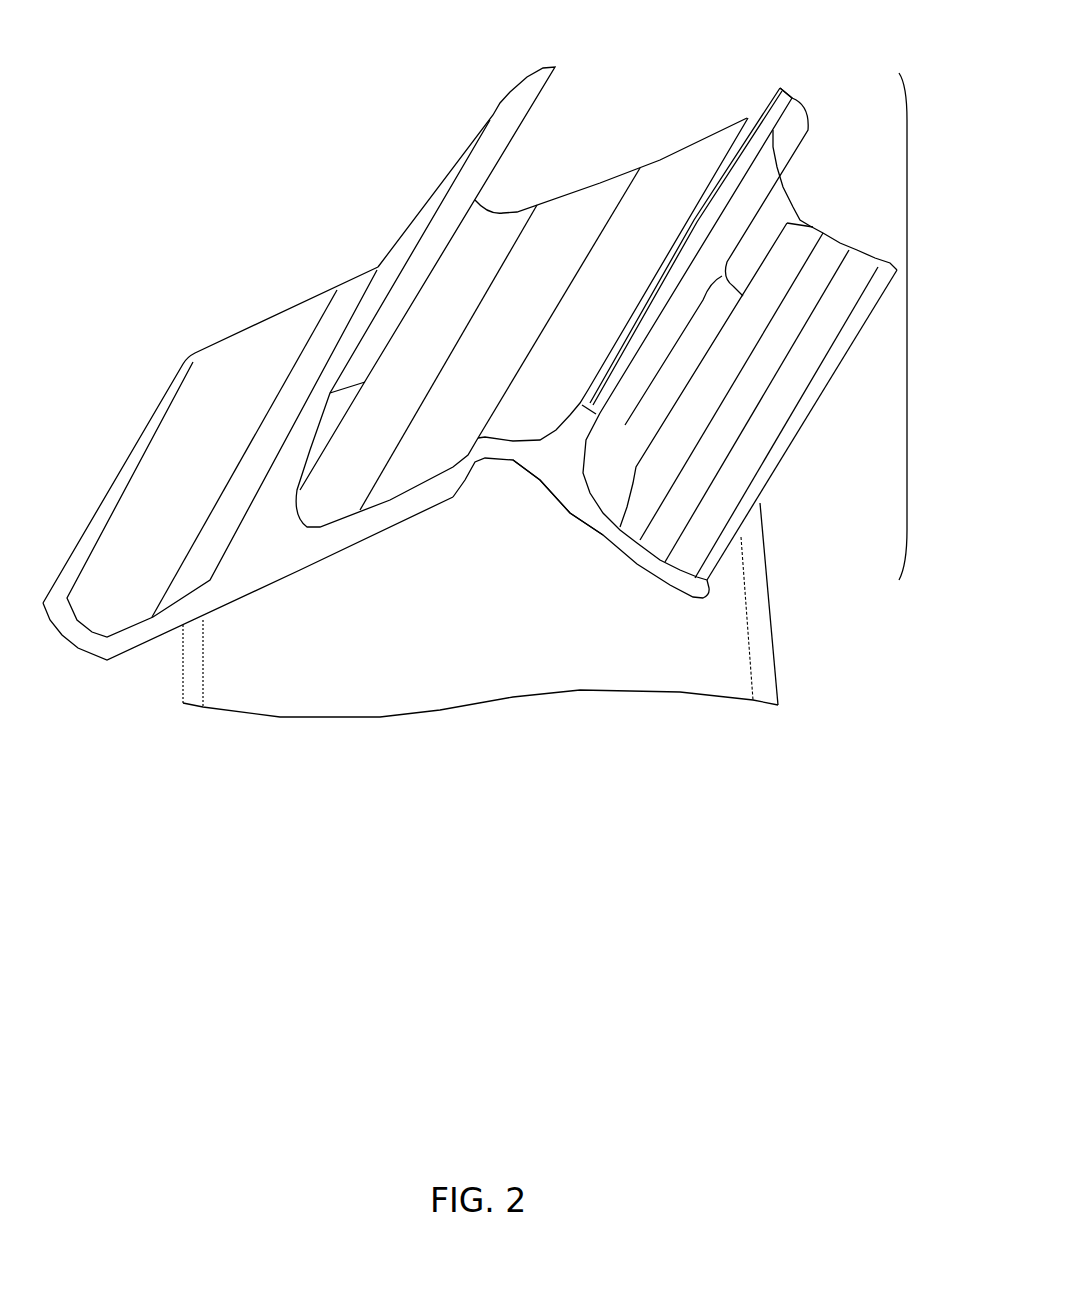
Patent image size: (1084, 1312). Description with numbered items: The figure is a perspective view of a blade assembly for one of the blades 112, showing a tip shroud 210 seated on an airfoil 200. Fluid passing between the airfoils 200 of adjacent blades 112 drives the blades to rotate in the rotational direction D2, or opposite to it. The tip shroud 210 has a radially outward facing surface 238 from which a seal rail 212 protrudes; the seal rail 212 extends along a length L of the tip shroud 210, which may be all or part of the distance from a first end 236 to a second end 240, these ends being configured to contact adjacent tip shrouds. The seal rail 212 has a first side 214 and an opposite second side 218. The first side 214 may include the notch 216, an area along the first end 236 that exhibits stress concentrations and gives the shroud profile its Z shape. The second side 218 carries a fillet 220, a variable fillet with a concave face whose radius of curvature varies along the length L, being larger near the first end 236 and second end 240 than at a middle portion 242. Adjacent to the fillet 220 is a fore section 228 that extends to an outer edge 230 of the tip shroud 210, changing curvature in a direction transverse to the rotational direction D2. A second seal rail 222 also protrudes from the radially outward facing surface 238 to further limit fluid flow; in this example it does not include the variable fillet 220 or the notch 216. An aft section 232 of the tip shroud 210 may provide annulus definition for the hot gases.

The airfoil 200 is at (727, 613).
The tip shroud 210 is at (909, 323).
The seal rail 212 is at (794, 98).
The first side 214 is at (712, 168).
The notch 216 is at (472, 467).
The second side 218 is at (785, 202).
The fillet 220 is at (718, 290).
The second seal rail 222 is at (507, 118).
The fore section 228 is at (672, 540).
The outer edge 230 is at (795, 445).
The aft section 232 is at (252, 395).
The first end 236 is at (565, 485).
The radially outward facing surface 238 is at (573, 262).
The second end 240 is at (757, 117).
The middle portion 242 is at (693, 368).
The length L is at (723, 282).
The rotational direction D2 is at (127, 1050).
The blade 112 is at (622, 810).